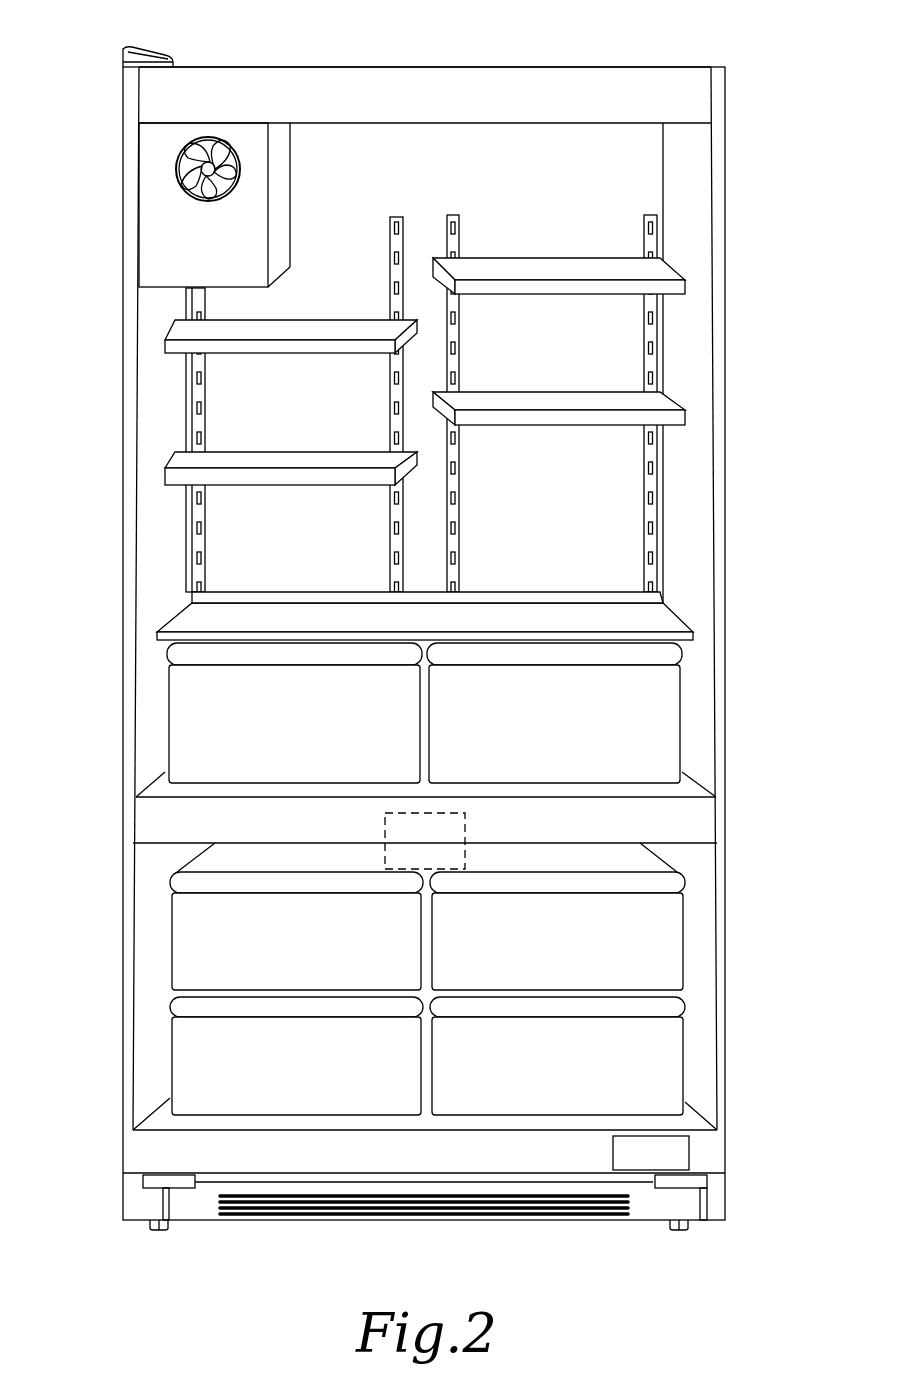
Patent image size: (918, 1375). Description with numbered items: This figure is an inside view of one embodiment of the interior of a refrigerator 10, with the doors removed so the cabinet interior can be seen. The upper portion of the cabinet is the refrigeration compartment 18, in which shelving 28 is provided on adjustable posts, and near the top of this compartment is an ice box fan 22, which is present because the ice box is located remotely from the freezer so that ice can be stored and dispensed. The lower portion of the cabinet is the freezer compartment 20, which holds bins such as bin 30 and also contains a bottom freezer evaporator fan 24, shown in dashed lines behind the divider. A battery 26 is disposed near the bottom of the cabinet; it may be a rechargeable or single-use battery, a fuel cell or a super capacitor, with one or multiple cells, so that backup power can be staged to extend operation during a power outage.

The refrigerator appliance 10 is at (444, 40).
The refrigeration compartment 18 is at (620, 178).
The freezer compartment 20 is at (682, 865).
The ice box fan 22 is at (190, 166).
The bottom freezer evaporator fan 24 is at (440, 830).
The battery 26 is at (673, 1152).
The shelving 28 is at (300, 330).
The bin 30 is at (186, 882).